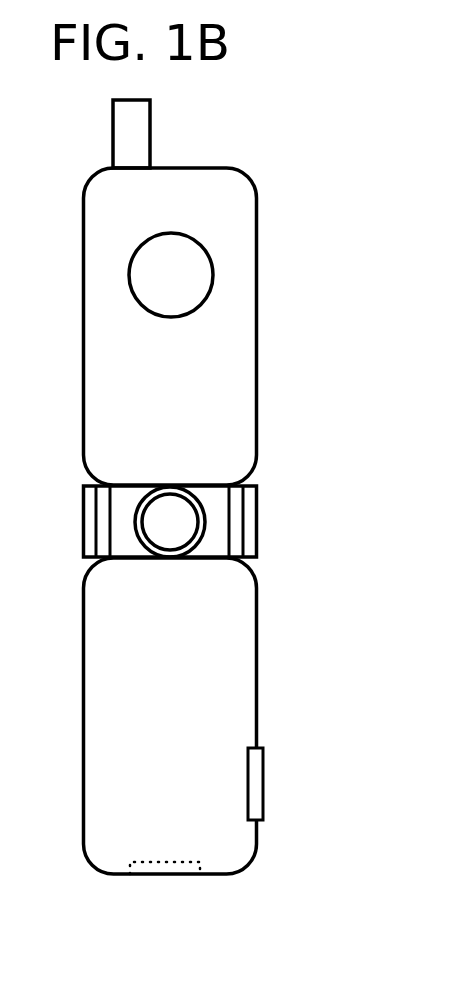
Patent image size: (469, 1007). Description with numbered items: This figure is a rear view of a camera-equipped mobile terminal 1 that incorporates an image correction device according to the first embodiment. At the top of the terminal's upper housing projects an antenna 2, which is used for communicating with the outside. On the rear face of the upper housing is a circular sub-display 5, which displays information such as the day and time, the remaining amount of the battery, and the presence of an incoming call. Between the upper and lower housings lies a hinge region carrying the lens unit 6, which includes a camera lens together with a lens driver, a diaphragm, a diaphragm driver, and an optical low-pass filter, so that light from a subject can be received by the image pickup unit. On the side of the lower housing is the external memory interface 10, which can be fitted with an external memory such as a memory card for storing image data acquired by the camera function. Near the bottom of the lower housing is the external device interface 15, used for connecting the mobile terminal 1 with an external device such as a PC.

The mobile terminal 1 is at (248, 864).
The antenna 2 is at (117, 155).
The sub-display 5 is at (128, 275).
The lens unit 6 is at (200, 542).
The external memory interface 10 is at (258, 762).
The external device interface 15 is at (145, 867).